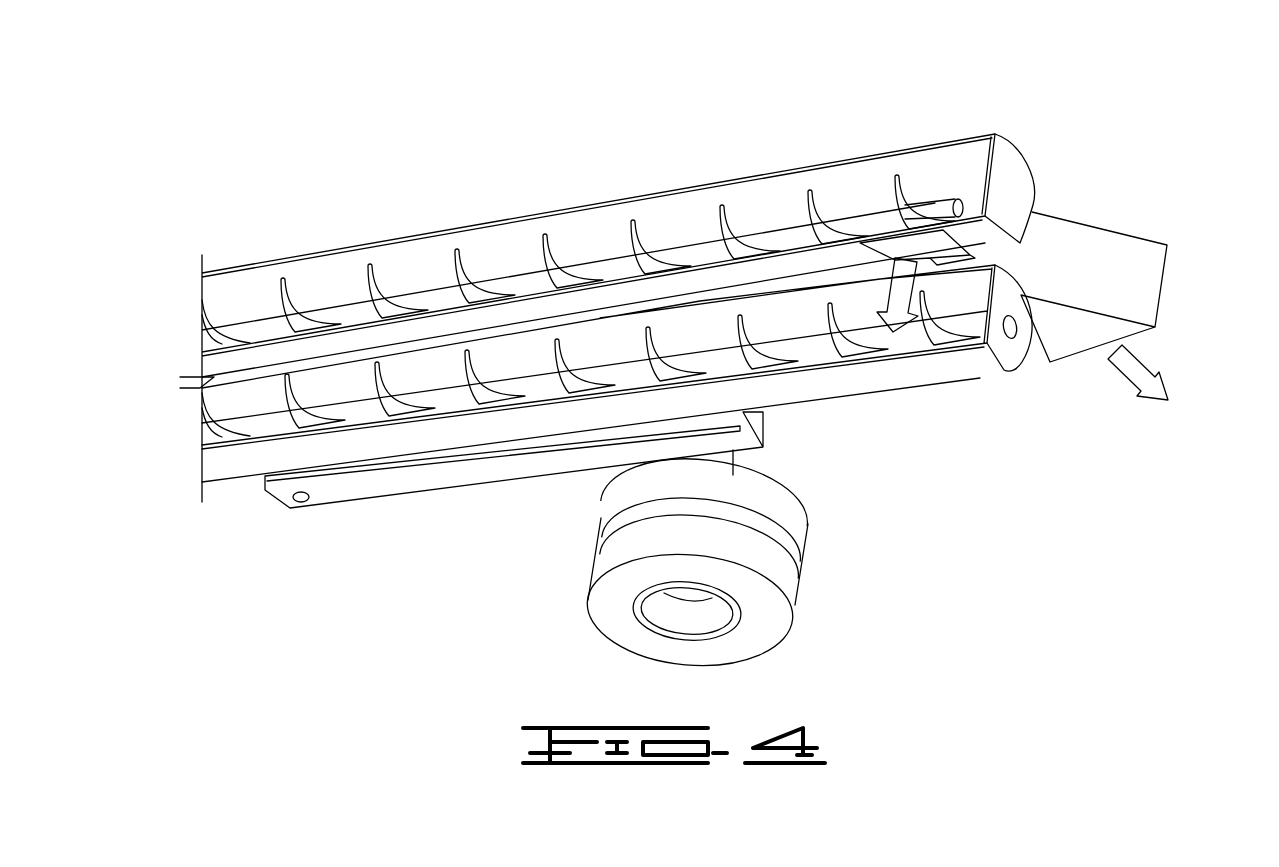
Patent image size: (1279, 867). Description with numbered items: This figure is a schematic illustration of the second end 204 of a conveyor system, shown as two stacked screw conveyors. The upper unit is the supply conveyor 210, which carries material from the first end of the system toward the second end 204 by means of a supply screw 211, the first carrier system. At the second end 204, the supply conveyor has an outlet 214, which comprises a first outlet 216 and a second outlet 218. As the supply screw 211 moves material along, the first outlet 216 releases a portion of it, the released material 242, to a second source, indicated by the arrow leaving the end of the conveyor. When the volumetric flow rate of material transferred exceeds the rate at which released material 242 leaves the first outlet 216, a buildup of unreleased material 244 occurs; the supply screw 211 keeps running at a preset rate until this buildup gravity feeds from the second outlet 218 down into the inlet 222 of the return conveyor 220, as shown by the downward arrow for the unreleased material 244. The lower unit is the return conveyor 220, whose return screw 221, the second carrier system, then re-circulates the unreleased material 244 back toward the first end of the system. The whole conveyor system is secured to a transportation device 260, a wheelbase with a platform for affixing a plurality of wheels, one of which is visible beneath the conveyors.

The second end 204 is at (1130, 98).
The supply conveyor 210 is at (578, 206).
The supply screw 211 is at (337, 315).
The outlet 214 is at (1140, 262).
The first outlet 216 is at (806, 220).
The second outlet 218 is at (932, 247).
The return conveyor 220 is at (867, 393).
The return screw 221 is at (256, 428).
The inlet 222 is at (973, 310).
The released material 242 is at (1120, 378).
The unreleased material 244 is at (896, 257).
The transportation device 260 is at (556, 548).